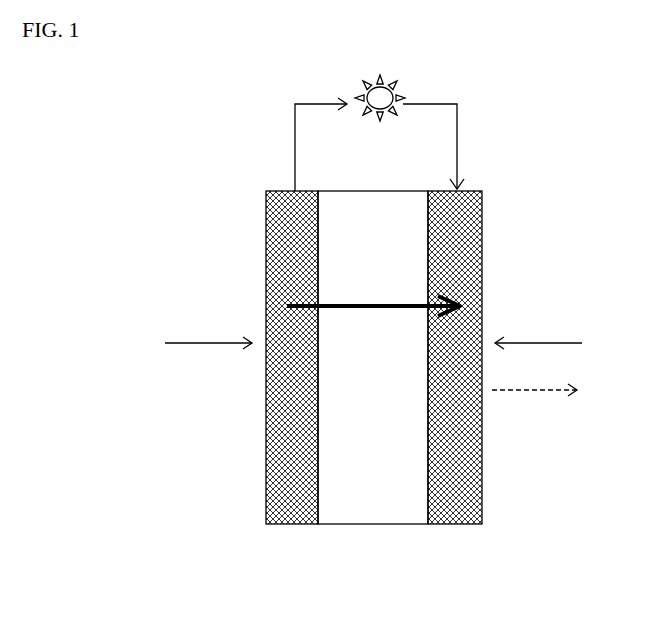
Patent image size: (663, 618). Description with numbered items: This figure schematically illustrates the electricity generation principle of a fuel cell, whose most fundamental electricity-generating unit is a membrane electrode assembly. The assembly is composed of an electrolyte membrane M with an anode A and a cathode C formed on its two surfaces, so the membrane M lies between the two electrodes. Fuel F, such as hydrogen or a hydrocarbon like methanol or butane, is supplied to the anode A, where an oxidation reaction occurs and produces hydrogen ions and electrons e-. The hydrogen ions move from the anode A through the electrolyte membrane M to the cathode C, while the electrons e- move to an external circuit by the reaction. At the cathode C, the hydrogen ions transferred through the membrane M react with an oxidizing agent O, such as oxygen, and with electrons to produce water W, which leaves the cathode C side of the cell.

The anode A is at (292, 524).
The electrolyte membrane M is at (373, 524).
The cathode C is at (460, 524).
The fuel F is at (197, 343).
The oxidizing agent O is at (549, 343).
The water W is at (550, 390).
The electrons e- is at (305, 144).